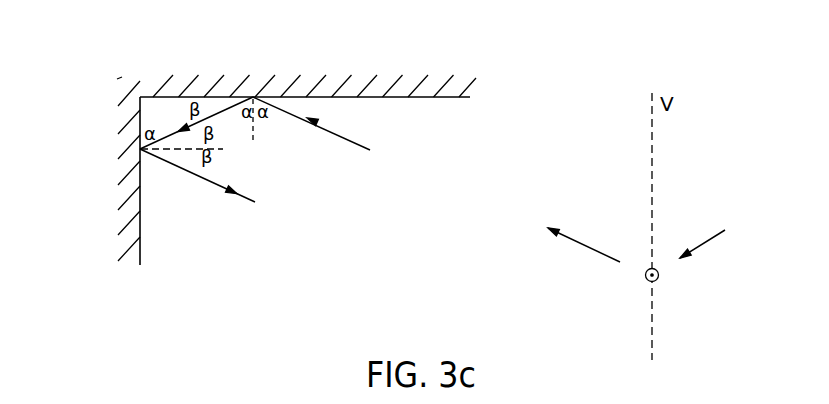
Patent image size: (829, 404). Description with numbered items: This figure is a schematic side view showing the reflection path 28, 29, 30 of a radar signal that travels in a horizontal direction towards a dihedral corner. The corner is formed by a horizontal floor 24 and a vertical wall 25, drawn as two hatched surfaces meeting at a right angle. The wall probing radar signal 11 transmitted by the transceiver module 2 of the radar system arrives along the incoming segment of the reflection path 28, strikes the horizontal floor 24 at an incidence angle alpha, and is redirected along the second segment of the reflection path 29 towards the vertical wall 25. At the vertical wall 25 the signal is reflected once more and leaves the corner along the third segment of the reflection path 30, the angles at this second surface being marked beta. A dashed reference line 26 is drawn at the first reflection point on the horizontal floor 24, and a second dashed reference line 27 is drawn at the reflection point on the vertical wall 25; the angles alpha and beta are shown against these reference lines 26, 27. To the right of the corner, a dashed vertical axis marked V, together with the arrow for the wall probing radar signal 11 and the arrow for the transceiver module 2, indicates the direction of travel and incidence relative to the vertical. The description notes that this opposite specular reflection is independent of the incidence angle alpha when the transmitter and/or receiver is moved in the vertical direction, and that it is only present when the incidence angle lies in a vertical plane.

The transceiver module 2 is at (709, 234).
The wall probing radar signal 11 is at (584, 238).
The horizontal floor 24 is at (348, 97).
The vertical wall 25 is at (135, 205).
The normal to first wall 26 is at (255, 130).
The normal to second wall 27 is at (221, 150).
The reflection path 28 is at (353, 138).
The reflection path 29 is at (222, 112).
The reflection path 30 is at (185, 170).